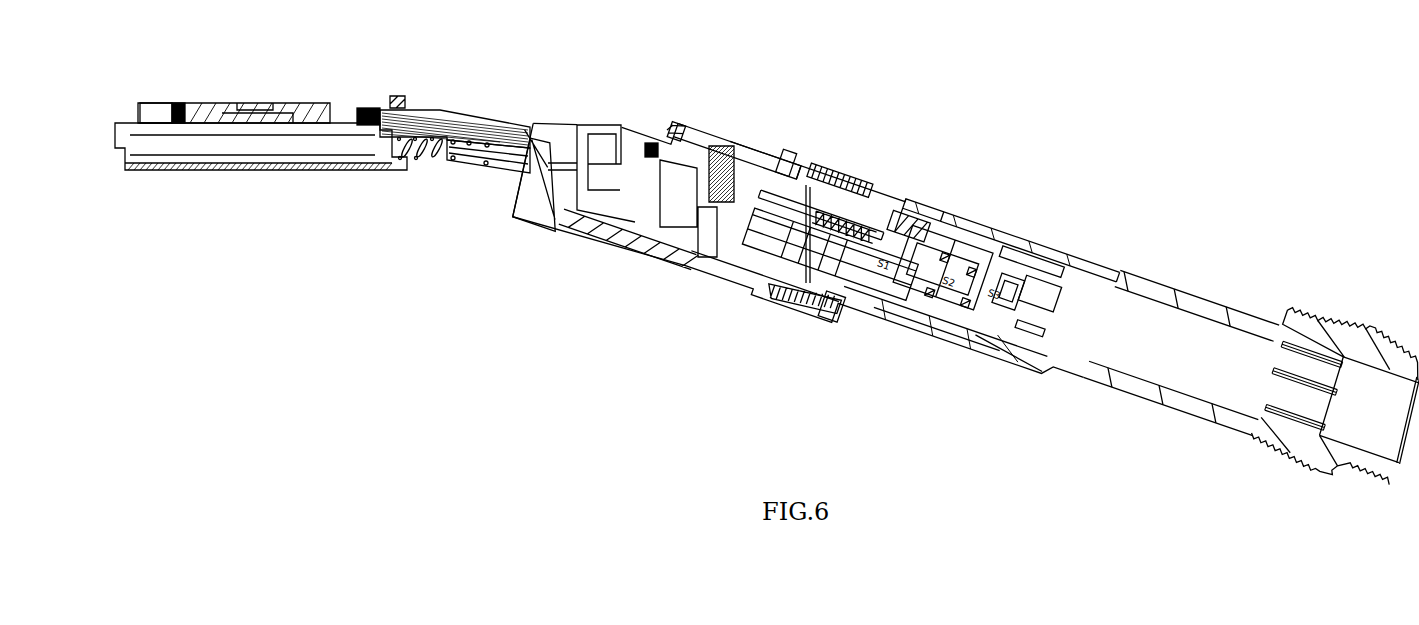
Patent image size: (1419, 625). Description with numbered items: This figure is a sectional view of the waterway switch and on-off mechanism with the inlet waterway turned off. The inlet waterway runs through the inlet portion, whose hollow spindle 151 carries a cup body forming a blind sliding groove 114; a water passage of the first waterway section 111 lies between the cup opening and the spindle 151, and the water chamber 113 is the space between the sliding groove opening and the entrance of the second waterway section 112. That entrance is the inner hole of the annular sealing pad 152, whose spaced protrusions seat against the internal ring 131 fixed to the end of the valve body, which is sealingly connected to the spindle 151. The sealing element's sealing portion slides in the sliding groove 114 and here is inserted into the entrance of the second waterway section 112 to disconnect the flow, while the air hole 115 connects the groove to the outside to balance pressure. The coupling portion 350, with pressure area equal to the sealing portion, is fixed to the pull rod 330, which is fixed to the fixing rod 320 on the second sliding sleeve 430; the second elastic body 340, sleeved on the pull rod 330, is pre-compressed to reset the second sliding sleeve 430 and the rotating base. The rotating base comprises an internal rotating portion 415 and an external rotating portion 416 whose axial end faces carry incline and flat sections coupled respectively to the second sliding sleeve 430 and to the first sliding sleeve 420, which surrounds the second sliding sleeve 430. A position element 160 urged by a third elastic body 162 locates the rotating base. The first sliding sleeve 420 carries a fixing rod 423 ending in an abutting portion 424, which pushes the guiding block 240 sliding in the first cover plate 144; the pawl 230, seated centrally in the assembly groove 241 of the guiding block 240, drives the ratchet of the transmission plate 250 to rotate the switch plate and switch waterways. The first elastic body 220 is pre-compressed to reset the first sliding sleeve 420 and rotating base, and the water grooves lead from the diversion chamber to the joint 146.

The first waterway section 111 is at (1200, 340).
The second waterway section 112 is at (920, 253).
The water chamber 113 is at (983, 243).
The sliding groove 114 is at (977, 312).
The air hole 115 is at (1012, 325).
The internal ring 131 is at (897, 225).
The first cover plate 144 is at (172, 130).
The joint 146 is at (642, 150).
The spindle 151 is at (1198, 398).
The sealing pad 152 is at (912, 305).
The position element 160 is at (782, 302).
The third elastic body 162 is at (825, 312).
The first elastic body 220 is at (430, 160).
The pawl 230 is at (367, 107).
The guiding block 240 is at (440, 108).
The assembly groove 241 is at (357, 135).
The transmission plate 250 is at (218, 120).
The fixing rod 320 is at (677, 130).
The pull rod 330 is at (793, 233).
The second elastic body 340 is at (863, 233).
The coupling portion 350 is at (870, 262).
The internal rotating portion 415 is at (790, 150).
The external rotating portion 416 is at (763, 147).
The first sliding sleeve 420 is at (717, 137).
The fixing rod 423 is at (580, 227).
The abutting portion 424 is at (548, 165).
The second sliding sleeve 430 is at (657, 260).